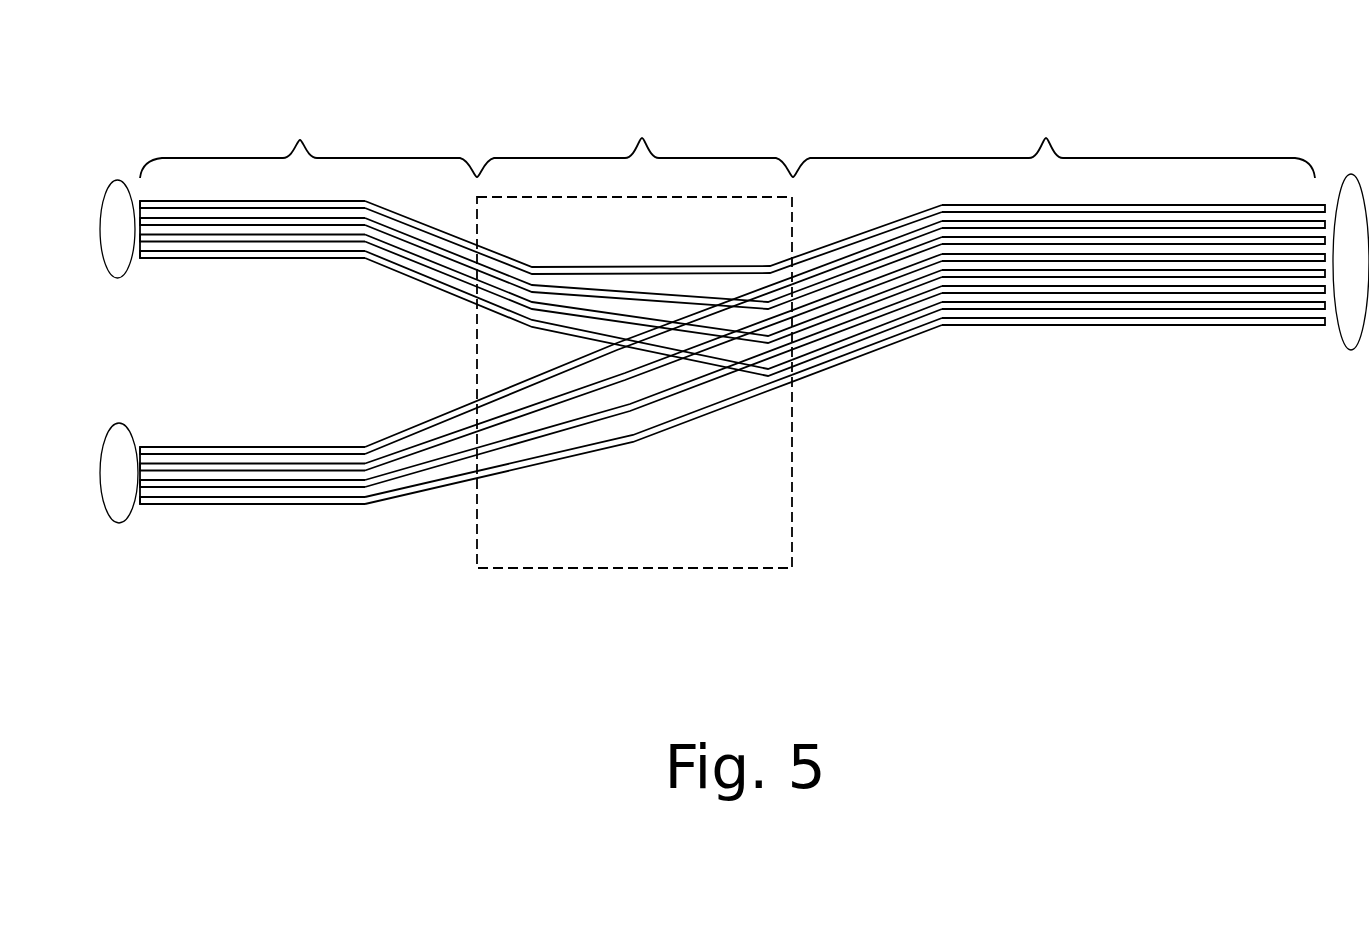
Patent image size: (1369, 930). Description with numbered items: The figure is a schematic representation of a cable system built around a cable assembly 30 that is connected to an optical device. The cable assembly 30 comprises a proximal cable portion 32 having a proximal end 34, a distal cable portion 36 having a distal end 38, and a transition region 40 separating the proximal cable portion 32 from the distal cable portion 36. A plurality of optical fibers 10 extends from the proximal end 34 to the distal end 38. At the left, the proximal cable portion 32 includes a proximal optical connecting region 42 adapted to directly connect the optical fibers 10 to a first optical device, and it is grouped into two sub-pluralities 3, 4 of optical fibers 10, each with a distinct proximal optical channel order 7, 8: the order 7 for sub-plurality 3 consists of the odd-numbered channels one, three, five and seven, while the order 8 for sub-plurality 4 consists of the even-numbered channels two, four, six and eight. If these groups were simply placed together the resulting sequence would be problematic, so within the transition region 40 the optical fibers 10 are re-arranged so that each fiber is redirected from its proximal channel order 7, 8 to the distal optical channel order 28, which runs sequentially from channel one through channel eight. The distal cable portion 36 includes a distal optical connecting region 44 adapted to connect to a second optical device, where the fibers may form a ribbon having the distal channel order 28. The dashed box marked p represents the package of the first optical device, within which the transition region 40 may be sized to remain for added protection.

The cable assembly 30 is at (560, 88).
The proximal cable portion 32 is at (308, 139).
The transition region 40 is at (635, 139).
The distal cable portion 36 is at (1054, 139).
The distal optical channel order 28 is at (1340, 178).
The proximal optical channel order 7 is at (132, 185).
The proximal optical channel order 8 is at (120, 524).
The proximal end 34 is at (146, 261).
The proximal optical connecting region 42 is at (155, 274).
The sub-plurality of optical fibers 3 is at (290, 210).
The sub-plurality of optical fibers 4 is at (332, 497).
The optical fibers 10 is at (890, 351).
The distal optical connecting region 44 is at (1272, 351).
The distal end 38 is at (1293, 328).
The package p is at (743, 570).